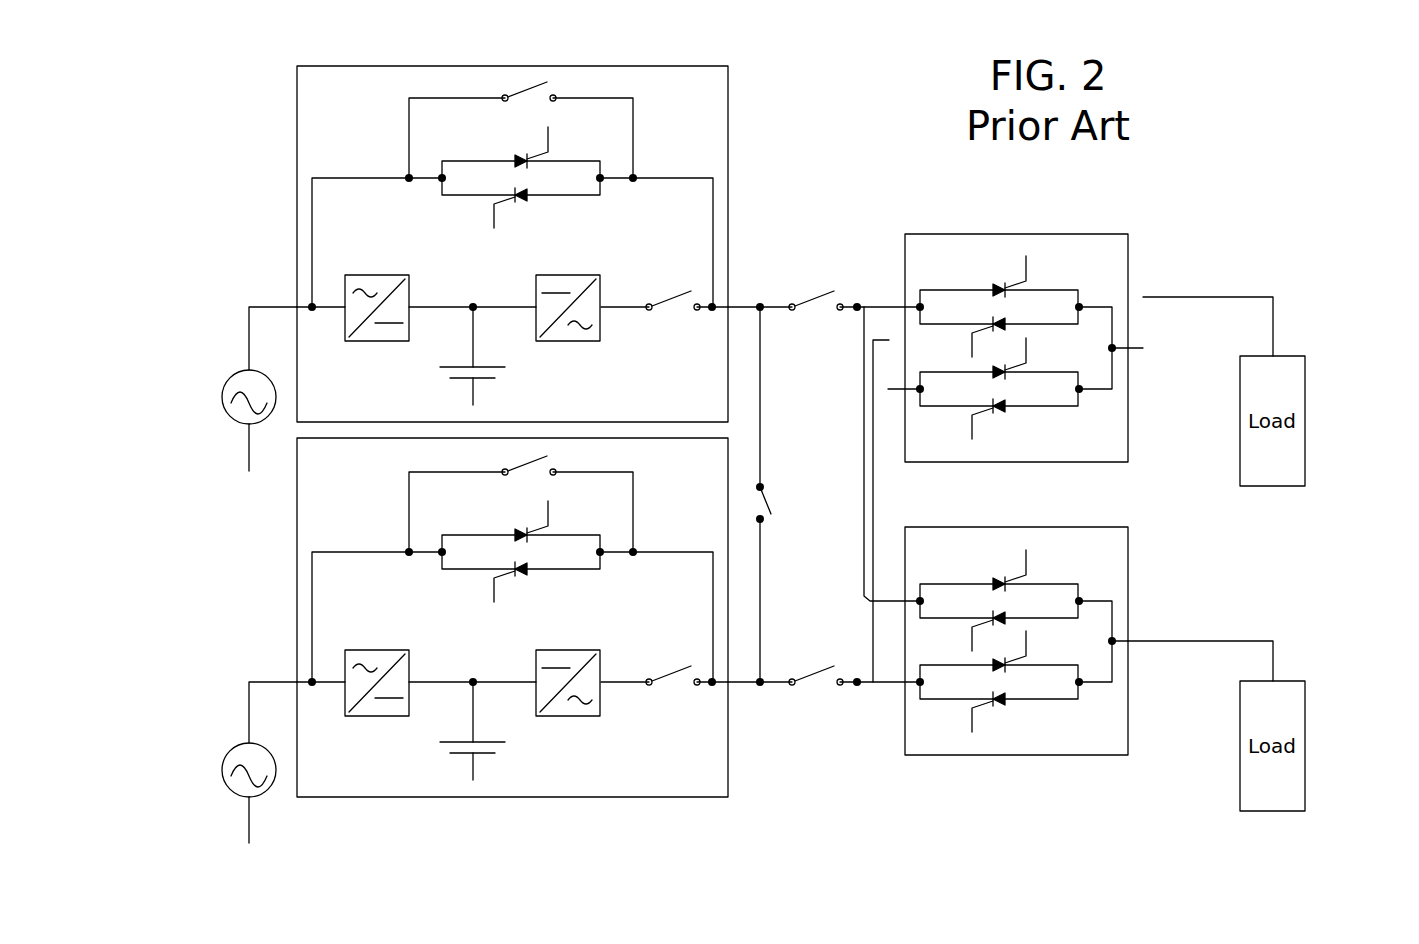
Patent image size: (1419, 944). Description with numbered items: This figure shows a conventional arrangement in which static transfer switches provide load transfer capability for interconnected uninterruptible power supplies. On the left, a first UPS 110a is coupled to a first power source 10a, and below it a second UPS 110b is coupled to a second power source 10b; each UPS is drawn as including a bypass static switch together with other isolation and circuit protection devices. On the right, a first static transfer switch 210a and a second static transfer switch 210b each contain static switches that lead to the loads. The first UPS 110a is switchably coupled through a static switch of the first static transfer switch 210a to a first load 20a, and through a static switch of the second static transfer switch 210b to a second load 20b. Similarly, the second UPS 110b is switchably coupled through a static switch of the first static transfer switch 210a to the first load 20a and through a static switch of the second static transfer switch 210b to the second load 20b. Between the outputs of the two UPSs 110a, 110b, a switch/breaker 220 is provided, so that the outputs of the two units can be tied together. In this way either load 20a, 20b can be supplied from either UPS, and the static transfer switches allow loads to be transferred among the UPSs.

The first power source 10a is at (241, 370).
The second power source 10b is at (242, 742).
The first UPS 110a is at (297, 245).
The second UPS 110b is at (297, 618).
The first static transfer switch 210a is at (1024, 334).
The second static transfer switch 210b is at (1016, 627).
The switch/breaker 220 is at (776, 490).
The first load 20a is at (1305, 420).
The second load 20b is at (1305, 745).